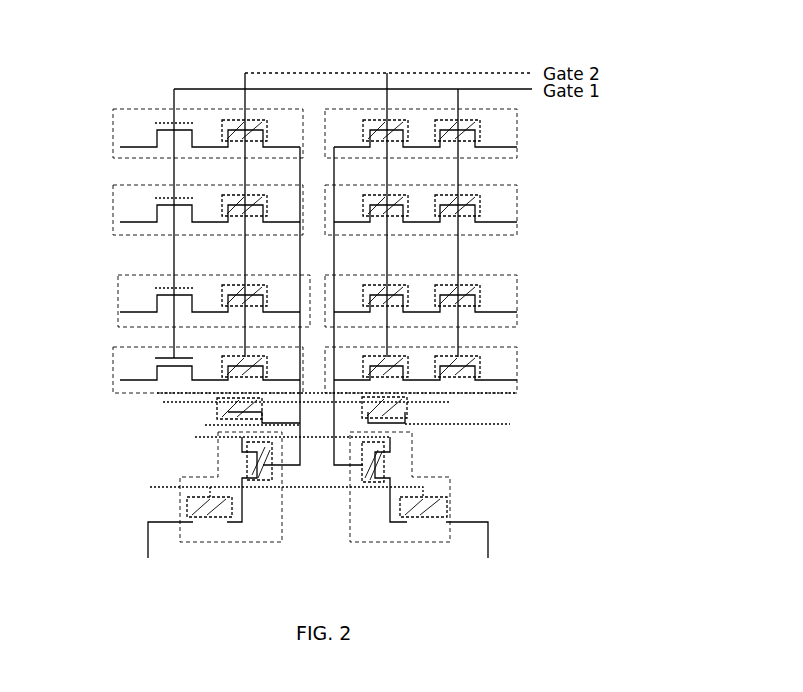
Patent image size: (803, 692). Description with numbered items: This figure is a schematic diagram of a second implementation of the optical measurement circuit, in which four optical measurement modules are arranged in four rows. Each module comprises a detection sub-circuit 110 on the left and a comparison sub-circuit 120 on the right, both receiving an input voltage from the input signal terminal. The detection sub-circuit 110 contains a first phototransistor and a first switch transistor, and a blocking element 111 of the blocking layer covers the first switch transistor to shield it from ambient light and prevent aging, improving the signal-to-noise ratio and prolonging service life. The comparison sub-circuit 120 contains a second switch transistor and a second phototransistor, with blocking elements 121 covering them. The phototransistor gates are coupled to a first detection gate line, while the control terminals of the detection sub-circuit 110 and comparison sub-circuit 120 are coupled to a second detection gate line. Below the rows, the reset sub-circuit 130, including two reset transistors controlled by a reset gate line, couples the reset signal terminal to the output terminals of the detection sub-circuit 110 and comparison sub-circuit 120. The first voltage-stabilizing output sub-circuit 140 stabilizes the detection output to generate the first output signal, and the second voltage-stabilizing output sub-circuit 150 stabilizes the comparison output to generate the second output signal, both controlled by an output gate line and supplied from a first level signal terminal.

The detection sub-circuit 110 is at (113, 130).
The blocking element 111 is at (232, 120).
The comparison sub-circuit 120 is at (517, 133).
The blocking element 121 is at (392, 122).
The reset sub-circuit 130 is at (437, 397).
The first voltage-stabilizing output sub-circuit 140 is at (263, 545).
The second voltage-stabilizing output sub-circuit 150 is at (413, 460).